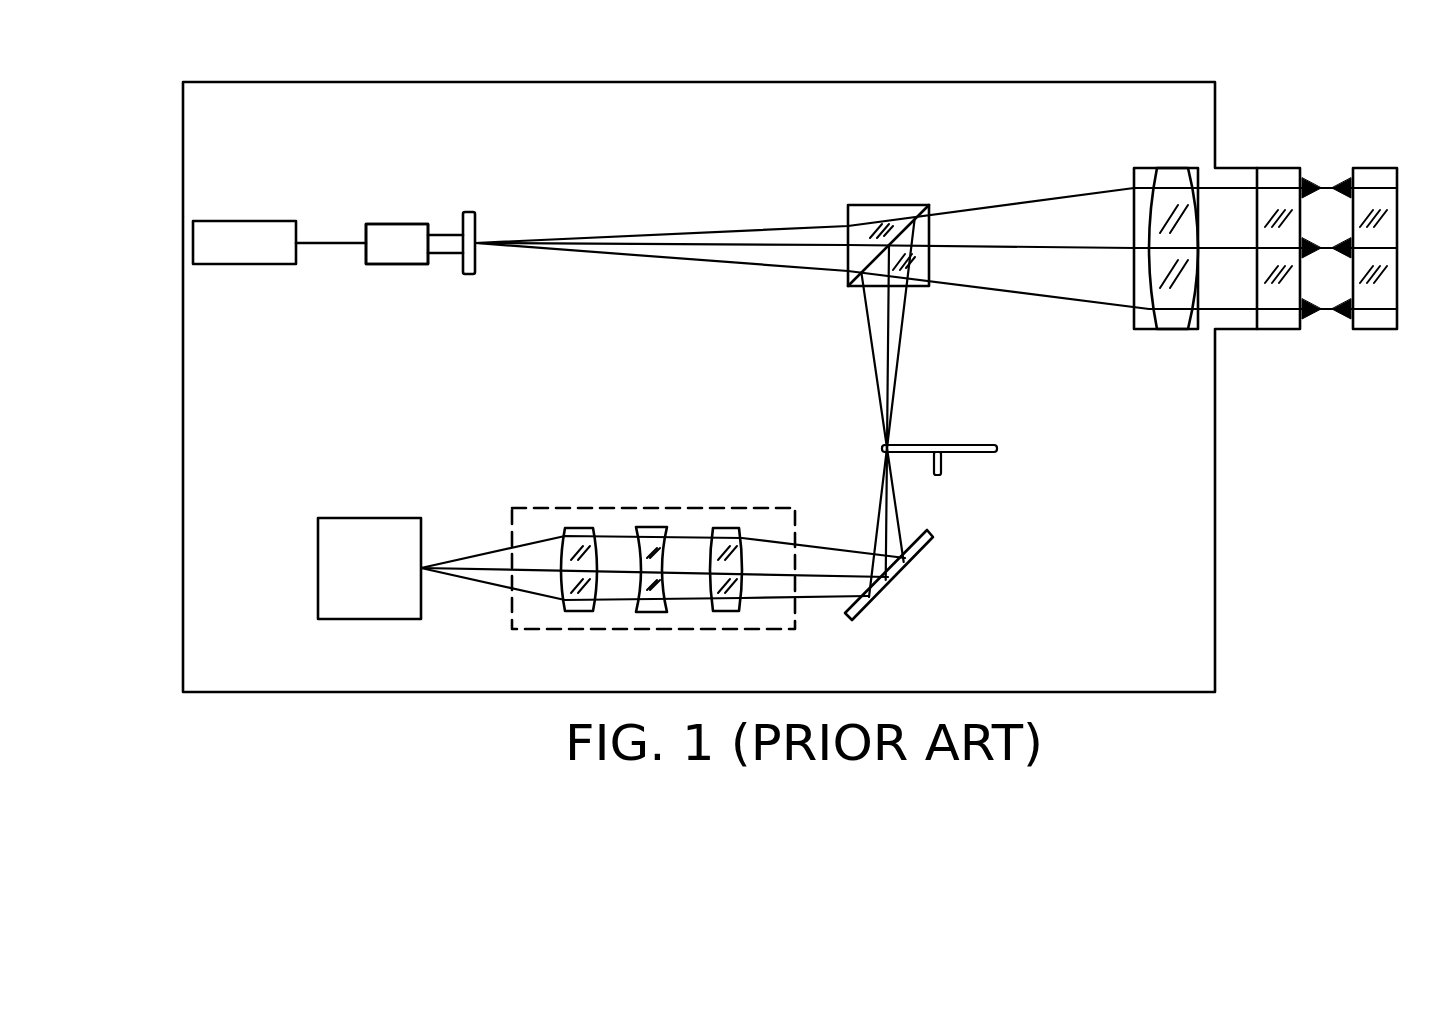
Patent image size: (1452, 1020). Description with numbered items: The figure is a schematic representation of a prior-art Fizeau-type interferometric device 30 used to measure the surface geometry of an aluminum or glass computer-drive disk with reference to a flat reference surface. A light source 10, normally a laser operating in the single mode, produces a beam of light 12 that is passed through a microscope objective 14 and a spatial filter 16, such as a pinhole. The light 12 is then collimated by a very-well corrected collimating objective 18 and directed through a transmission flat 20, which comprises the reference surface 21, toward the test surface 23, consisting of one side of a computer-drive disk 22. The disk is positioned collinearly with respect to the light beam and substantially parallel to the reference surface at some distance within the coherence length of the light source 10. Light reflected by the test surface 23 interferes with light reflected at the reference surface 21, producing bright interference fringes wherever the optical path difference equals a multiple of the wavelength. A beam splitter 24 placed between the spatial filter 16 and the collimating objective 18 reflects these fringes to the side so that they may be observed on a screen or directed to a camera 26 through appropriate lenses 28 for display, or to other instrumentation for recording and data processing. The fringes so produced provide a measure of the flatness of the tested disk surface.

The light source 10 is at (256, 243).
The beam of light 12 is at (331, 242).
The microscope objective 14 is at (390, 247).
The spatial filter 16 is at (469, 221).
The collimating objective 18 is at (1148, 322).
The transmission flat 20 is at (1270, 325).
The reference surface 21 is at (1302, 220).
The computer-drive disk 22 is at (1367, 325).
The test surface 23 is at (1348, 220).
The beam splitter 24 is at (873, 213).
The camera 26 is at (370, 537).
The lenses 28 is at (653, 508).
The interferometric device 30 is at (686, 81).